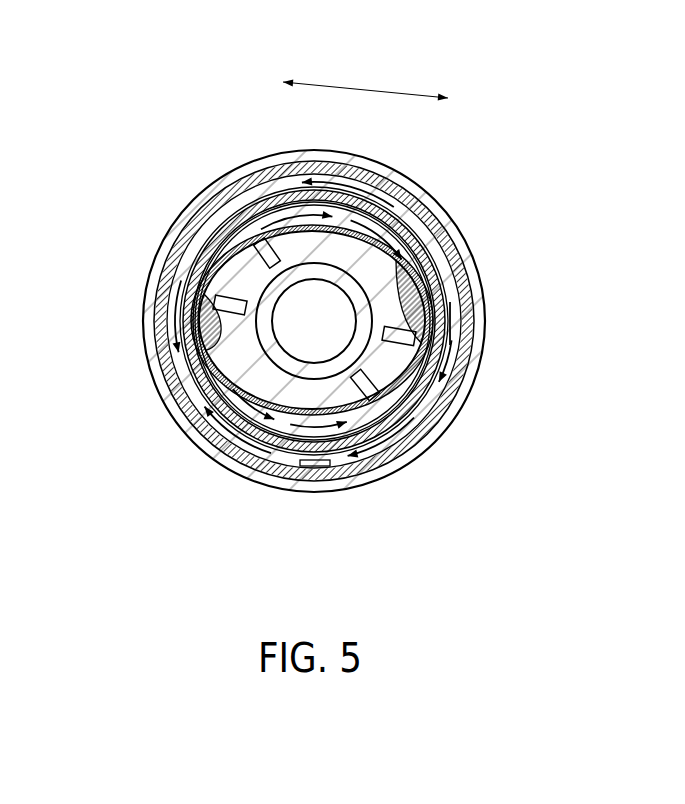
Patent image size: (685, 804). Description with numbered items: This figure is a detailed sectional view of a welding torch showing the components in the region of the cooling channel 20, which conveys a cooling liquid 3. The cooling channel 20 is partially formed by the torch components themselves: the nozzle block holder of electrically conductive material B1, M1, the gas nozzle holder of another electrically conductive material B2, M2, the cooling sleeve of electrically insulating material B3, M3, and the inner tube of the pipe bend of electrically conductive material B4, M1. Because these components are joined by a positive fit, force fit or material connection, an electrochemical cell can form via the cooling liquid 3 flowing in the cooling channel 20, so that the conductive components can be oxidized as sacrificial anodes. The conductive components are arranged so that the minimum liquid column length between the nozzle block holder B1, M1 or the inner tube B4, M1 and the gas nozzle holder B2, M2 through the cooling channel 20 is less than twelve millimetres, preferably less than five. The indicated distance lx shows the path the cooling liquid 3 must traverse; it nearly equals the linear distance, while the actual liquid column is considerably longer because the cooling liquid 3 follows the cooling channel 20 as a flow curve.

The cooling liquid 3 is at (177, 303).
The cooling channel 20 is at (372, 392).
The first bearing / first motor element B1, M1 is at (440, 283).
The second bearing / second motor element B2, M2 is at (440, 220).
The third bearing / third motor element B3, M3 is at (213, 225).
The fourth bearing / first motor element B4, M1 is at (380, 307).
The distance lx is at (271, 232).